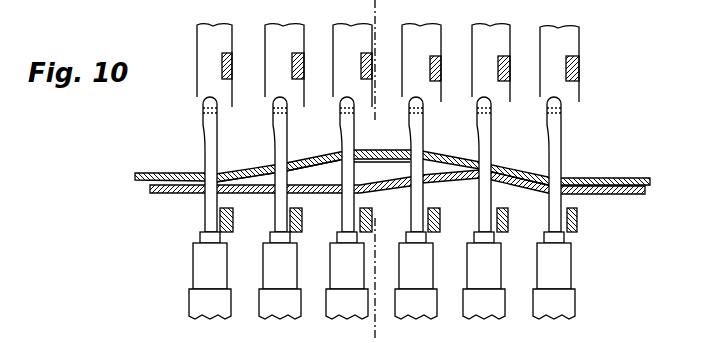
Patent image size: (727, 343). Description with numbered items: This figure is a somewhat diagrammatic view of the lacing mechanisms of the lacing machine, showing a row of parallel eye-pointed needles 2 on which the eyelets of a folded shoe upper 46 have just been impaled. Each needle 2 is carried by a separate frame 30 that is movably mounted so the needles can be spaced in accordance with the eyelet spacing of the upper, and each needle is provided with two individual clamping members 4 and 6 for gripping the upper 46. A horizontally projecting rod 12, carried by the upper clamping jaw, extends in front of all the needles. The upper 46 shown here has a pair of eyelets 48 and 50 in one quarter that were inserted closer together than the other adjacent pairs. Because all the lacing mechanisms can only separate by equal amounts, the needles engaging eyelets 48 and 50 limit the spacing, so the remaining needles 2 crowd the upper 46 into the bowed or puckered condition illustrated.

The eye-pointed needle 2 is at (560, 165).
The individual clamping member 4 is at (504, 51).
The individual clamping member 6 is at (578, 212).
The horizontally projecting rod 12 is at (398, 336).
The separate frame 30 is at (580, 97).
The upper 46 is at (163, 193).
The eyelet 48 is at (268, 182).
The eyelet 50 is at (345, 194).